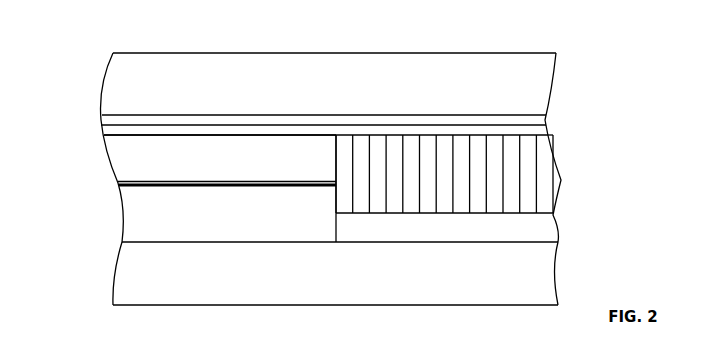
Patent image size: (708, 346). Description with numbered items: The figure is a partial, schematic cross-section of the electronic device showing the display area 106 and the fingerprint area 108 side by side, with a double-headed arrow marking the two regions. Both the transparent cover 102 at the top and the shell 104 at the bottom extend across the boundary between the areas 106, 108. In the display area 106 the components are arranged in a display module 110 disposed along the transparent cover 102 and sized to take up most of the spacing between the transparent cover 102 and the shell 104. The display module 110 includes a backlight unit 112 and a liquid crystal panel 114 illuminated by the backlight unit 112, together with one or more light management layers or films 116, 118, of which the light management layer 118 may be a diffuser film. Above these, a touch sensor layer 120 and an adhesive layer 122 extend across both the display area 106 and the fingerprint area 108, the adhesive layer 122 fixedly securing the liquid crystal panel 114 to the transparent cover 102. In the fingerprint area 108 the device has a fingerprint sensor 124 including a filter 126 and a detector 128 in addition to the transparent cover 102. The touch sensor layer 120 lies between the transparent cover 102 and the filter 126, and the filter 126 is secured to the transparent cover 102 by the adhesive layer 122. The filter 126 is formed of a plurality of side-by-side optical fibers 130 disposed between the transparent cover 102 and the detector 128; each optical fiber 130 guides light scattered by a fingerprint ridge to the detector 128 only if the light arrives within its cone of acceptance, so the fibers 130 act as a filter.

The transparent cover 102 is at (313, 92).
The shell 104 is at (313, 279).
The display area 106 is at (337, 45).
The fingerprint area 108 is at (337, 33).
The display module 110 is at (97, 135).
The backlight unit 112 is at (197, 216).
The liquid crystal panel 114 is at (197, 166).
The light management layer 116 is at (181, 181).
The light management layer 118 is at (142, 186).
The touch sensor layer 120 is at (548, 121).
The adhesive layer 122 is at (100, 127).
The fingerprint sensor 124 is at (606, 152).
The filter 126 is at (565, 135).
The detector 128 is at (414, 233).
The optical fibers 130 is at (477, 213).